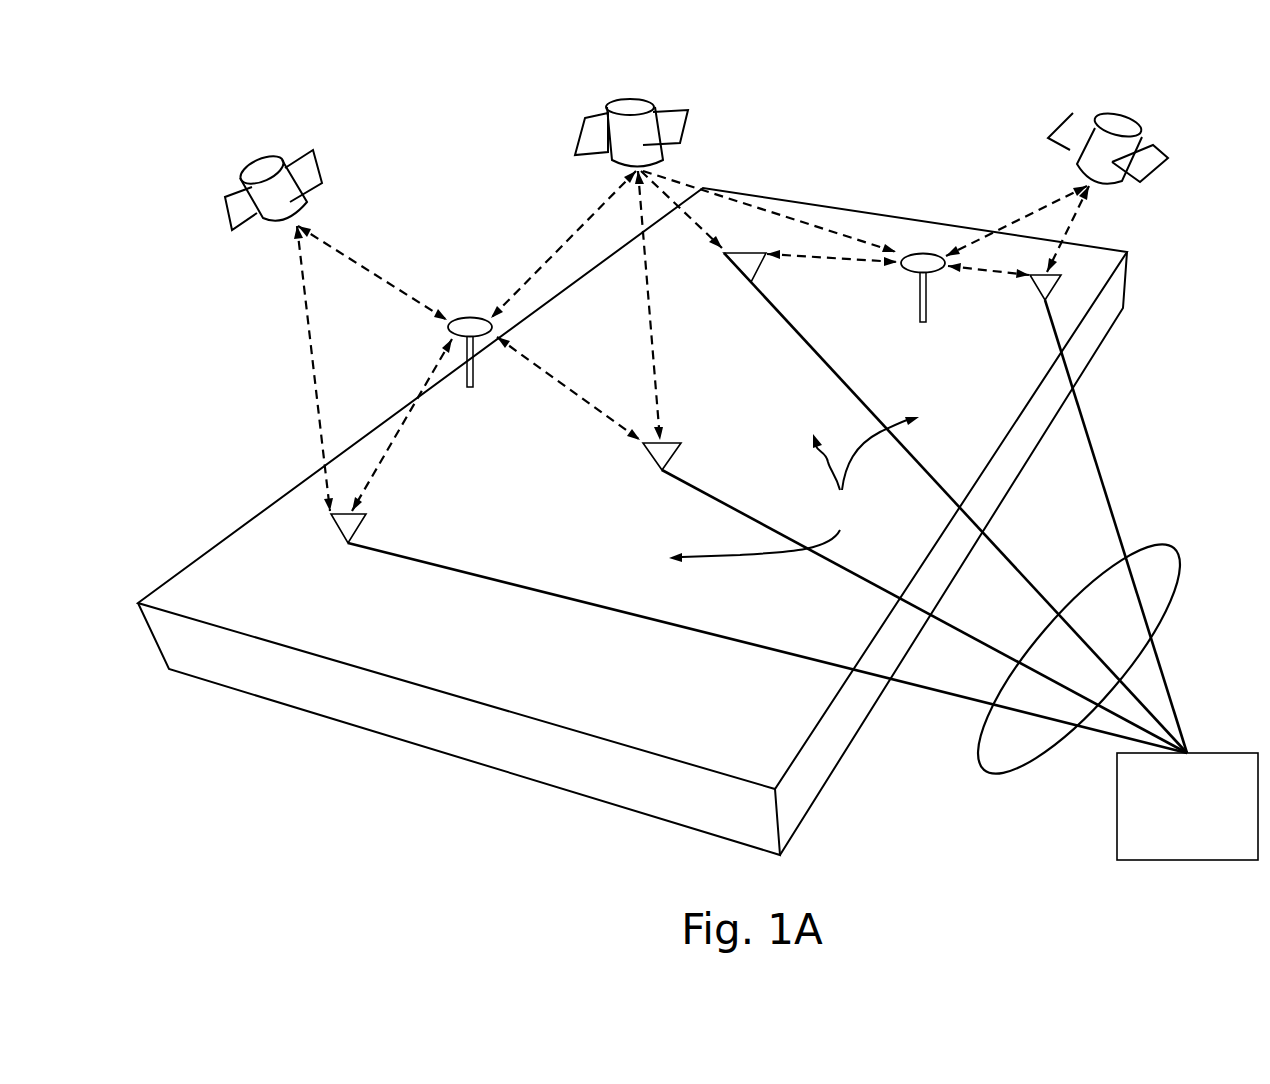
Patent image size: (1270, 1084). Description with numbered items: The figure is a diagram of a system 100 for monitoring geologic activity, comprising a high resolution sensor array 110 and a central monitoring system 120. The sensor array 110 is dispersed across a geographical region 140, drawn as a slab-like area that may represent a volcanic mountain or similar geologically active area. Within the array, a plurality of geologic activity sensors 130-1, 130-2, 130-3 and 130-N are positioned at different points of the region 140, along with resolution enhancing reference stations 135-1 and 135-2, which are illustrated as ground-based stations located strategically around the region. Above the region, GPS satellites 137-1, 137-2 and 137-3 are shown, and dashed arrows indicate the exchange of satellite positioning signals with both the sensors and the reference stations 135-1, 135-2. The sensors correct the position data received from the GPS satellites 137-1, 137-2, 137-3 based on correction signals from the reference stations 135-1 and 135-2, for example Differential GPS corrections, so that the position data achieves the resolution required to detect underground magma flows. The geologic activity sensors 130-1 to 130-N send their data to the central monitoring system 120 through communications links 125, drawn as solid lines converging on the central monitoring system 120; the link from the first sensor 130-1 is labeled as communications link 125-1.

The system 100 is at (236, 776).
The high resolution sensor array 110 is at (794, 489).
The central monitoring system 120 is at (1192, 861).
The communications links 125 is at (1168, 548).
The communications link 125-1 is at (937, 693).
The first geologic activity sensor 130-1 is at (337, 527).
The geologic activity sensor 130-2 is at (678, 457).
The geologic activity sensor 130-3 is at (1037, 293).
The geologic activity sensor 130-N is at (731, 268).
The resolution enhancing reference station 135-1 is at (470, 388).
The resolution enhancing reference station 135-2 is at (922, 323).
The GPS satellite 137-1 is at (255, 157).
The GPS satellite 137-2 is at (578, 135).
The GPS satellite 137-3 is at (1163, 167).
The geographical region 140 is at (440, 771).